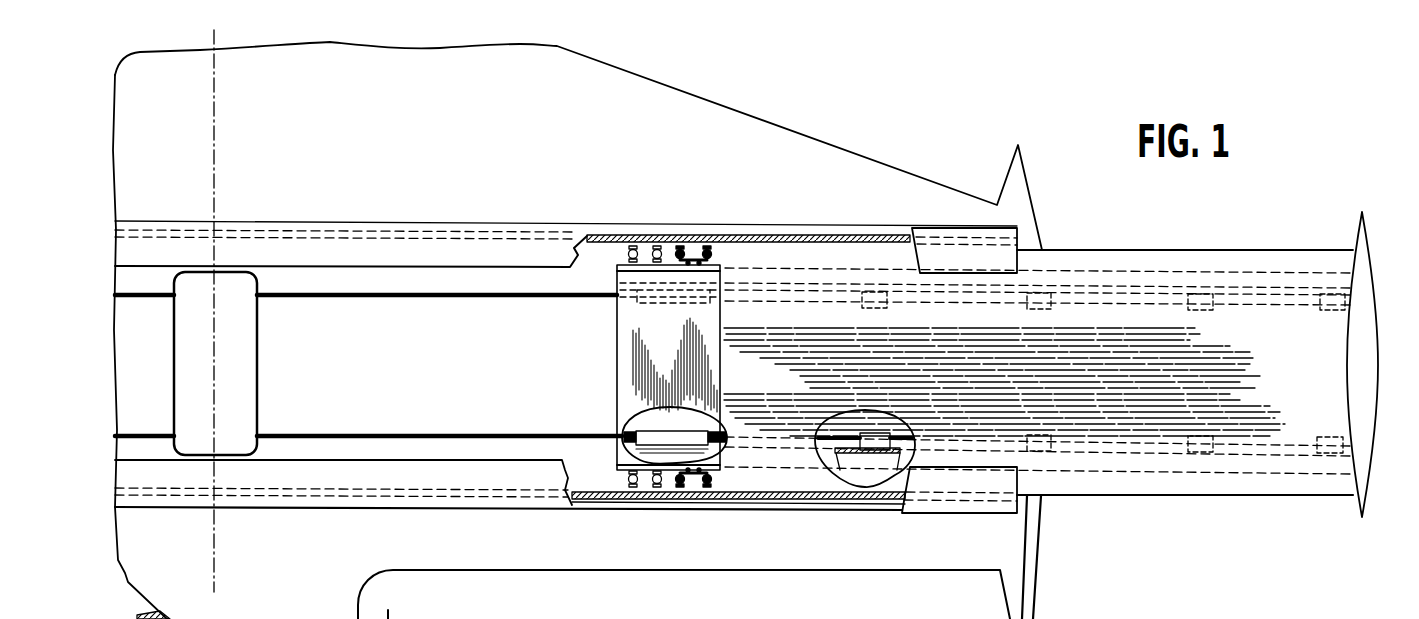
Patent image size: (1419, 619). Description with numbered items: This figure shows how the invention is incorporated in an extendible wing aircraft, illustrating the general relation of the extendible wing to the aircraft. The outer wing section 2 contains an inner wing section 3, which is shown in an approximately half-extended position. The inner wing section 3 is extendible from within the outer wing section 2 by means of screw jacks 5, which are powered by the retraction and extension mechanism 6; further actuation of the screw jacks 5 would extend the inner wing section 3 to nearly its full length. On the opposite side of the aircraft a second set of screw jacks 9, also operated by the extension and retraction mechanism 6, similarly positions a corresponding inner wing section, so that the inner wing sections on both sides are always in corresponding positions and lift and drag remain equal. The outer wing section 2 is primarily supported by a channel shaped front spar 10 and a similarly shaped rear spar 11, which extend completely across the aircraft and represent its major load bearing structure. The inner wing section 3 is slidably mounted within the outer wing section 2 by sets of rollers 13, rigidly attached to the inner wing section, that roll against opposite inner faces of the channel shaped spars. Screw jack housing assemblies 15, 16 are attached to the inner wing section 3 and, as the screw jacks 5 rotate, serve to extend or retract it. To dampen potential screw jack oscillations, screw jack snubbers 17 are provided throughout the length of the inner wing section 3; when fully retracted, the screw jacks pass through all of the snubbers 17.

The outer wing section 2 is at (763, 125).
The inner wing section 3 is at (1292, 397).
The screw jacks 5 is at (402, 297).
The retraction and extension mechanism 6 is at (259, 358).
The second set of screw jacks 9 is at (157, 298).
The front spar 10 is at (630, 226).
The rear spar 11 is at (848, 512).
The rollers 13 is at (662, 252).
The screw jack housing assembly 15 is at (680, 306).
The screw jack housing assembly 16 is at (662, 417).
The screw jack snubbers 17 is at (868, 431).